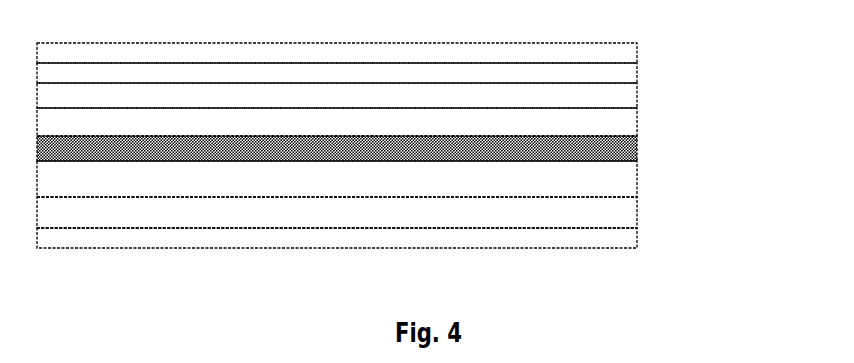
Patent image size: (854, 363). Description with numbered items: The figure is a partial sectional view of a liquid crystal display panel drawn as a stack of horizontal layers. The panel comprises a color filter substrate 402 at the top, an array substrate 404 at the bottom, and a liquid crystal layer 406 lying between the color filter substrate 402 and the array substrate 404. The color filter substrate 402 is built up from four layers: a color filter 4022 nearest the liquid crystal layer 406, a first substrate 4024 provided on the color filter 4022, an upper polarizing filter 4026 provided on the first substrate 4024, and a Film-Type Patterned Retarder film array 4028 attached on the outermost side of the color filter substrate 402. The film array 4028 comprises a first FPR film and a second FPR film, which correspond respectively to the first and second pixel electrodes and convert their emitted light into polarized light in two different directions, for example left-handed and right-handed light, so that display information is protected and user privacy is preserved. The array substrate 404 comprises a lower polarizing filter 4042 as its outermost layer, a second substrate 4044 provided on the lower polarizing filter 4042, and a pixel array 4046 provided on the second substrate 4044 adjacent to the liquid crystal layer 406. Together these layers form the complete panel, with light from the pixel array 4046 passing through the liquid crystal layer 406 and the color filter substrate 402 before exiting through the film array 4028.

The color filter substrate 402 is at (430, 86).
The Film-Type Patterned Retarder (FPR) film array 4028 is at (637, 49).
The upper polarizing filter 4026 is at (632, 73).
The first substrate 4024 is at (632, 90).
The color filter 4022 is at (632, 117).
The liquid crystal layer 406 is at (637, 145).
The array substrate 404 is at (430, 216).
The pixel array 4046 is at (632, 172).
The second substrate 4044 is at (632, 207).
The lower polarizing filter 4042 is at (632, 233).